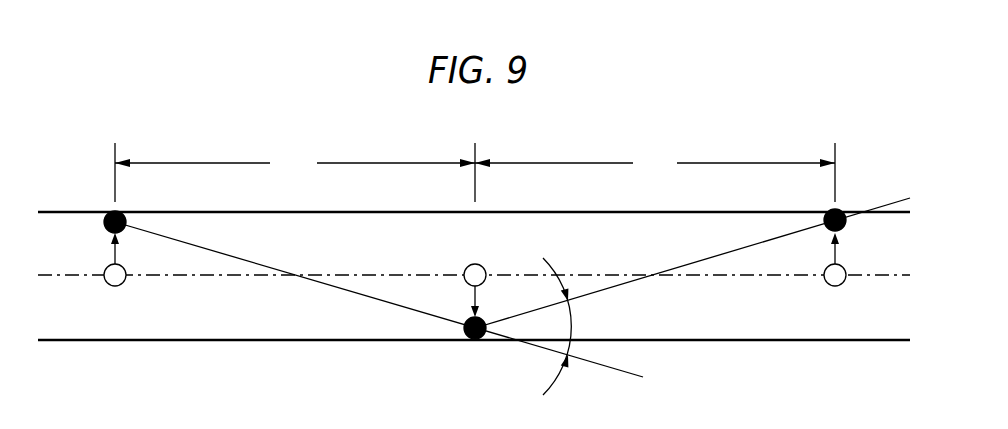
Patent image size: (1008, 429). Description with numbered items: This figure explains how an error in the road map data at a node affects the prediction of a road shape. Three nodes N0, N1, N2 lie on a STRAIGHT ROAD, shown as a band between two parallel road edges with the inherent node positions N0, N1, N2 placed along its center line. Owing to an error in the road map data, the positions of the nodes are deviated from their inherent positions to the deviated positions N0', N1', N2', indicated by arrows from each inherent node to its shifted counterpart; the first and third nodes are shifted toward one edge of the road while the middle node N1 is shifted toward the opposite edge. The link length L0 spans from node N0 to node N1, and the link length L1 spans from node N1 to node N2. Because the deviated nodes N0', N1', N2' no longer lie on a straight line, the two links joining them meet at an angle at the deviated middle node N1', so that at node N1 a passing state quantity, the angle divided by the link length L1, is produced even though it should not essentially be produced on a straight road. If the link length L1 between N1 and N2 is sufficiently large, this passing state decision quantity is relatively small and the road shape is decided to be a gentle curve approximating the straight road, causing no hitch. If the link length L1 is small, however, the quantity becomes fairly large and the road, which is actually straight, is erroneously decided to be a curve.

The node N0 is at (93, 270).
The deviated node N0' is at (93, 232).
The node N1 is at (454, 277).
The deviated node N1' is at (454, 312).
The node N2 is at (858, 270).
The deviated node N2' is at (860, 234).
The link length L0 is at (295, 162).
The link length L1 is at (655, 162).
The straight road STRAIGHT ROAD is at (320, 341).